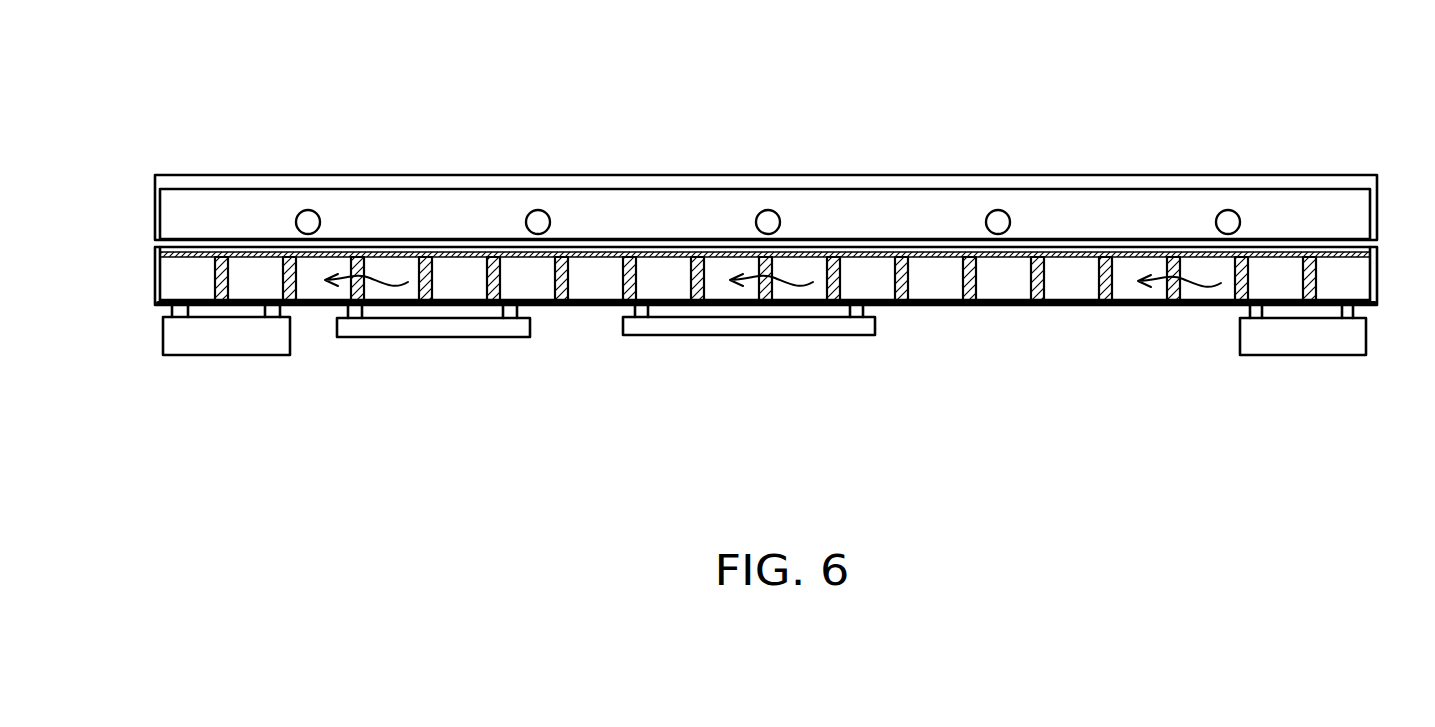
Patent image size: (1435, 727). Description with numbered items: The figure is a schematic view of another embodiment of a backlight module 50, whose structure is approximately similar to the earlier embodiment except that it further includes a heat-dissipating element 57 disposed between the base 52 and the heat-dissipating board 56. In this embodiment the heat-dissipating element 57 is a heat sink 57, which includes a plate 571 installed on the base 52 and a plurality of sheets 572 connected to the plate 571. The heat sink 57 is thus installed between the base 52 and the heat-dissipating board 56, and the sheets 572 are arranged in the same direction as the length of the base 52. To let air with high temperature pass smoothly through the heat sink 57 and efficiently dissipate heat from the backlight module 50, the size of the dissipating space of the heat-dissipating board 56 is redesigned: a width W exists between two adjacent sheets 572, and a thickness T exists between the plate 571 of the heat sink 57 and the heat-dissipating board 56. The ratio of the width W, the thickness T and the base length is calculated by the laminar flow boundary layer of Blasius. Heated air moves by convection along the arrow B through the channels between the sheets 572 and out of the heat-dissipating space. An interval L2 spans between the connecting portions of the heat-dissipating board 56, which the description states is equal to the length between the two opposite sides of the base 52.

The backlight module 50 is at (168, 73).
The base 52 is at (1380, 198).
The heat-dissipating board 56 is at (773, 247).
The heat-dissipating element 57 is at (820, 310).
The plate 571 is at (1027, 253).
The sheets 572 is at (1043, 281).
The arrow B is at (1222, 283).
The width W is at (202, 290).
The thickness T is at (245, 215).
The interval L2 is at (155, 305).